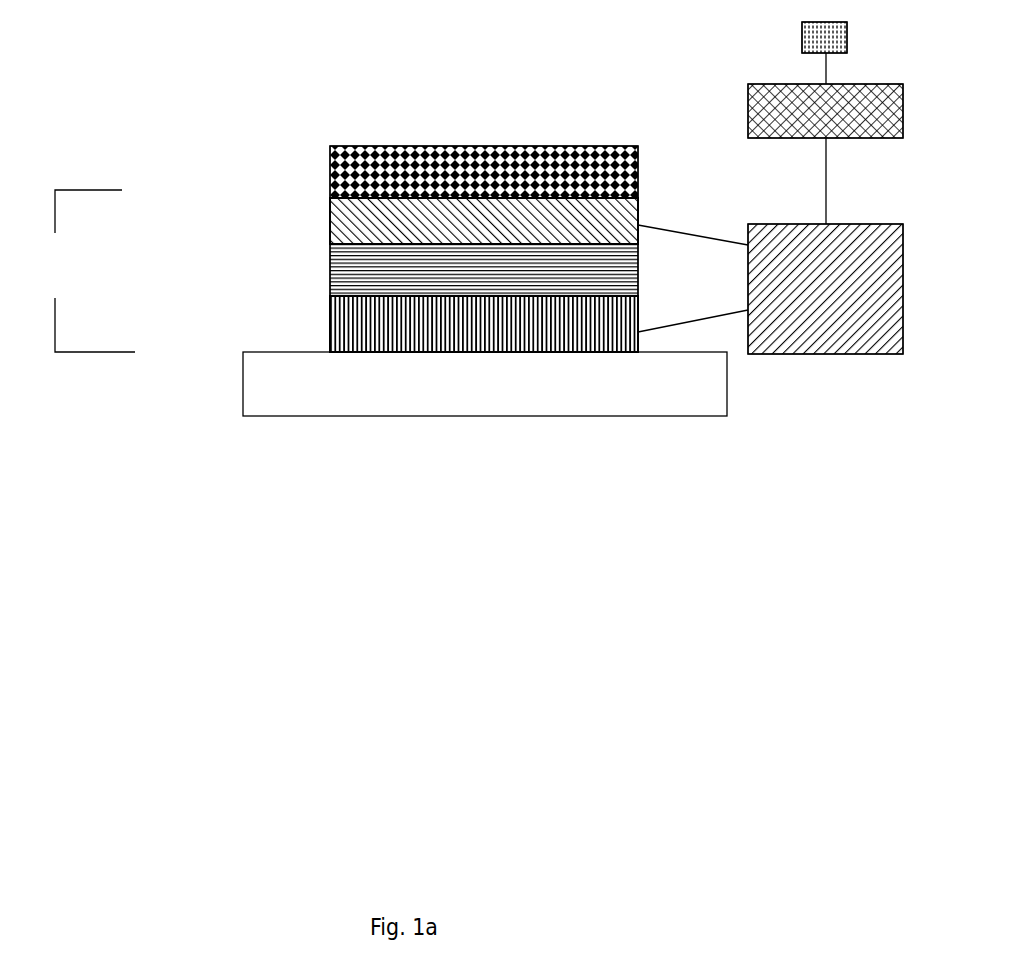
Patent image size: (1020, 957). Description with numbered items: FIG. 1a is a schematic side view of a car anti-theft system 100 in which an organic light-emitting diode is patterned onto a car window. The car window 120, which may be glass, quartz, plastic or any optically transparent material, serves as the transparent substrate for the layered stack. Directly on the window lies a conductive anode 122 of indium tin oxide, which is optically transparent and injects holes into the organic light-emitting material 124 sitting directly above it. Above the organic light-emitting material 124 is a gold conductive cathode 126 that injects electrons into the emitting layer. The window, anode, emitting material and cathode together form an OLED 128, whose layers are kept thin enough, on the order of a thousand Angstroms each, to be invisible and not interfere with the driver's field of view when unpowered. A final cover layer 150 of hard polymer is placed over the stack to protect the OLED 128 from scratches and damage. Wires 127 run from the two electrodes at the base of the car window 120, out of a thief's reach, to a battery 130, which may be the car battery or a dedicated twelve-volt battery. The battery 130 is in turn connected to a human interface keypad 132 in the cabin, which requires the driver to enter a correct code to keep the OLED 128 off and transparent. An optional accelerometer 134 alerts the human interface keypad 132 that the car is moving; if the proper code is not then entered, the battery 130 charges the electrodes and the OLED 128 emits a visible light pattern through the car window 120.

The car anti-theft system 100 is at (188, 438).
The car window 120 is at (232, 384).
The conductive anode 122 is at (308, 330).
The organic light-emitting material 124 is at (308, 276).
The conductive cathode 126 is at (308, 223).
The wires 127 is at (672, 230).
The OLED 128 is at (339, 271).
The battery 130 is at (827, 366).
The human interface keypad 132 is at (738, 106).
The accelerometer 134 is at (778, 43).
The cover layer 150 is at (308, 158).